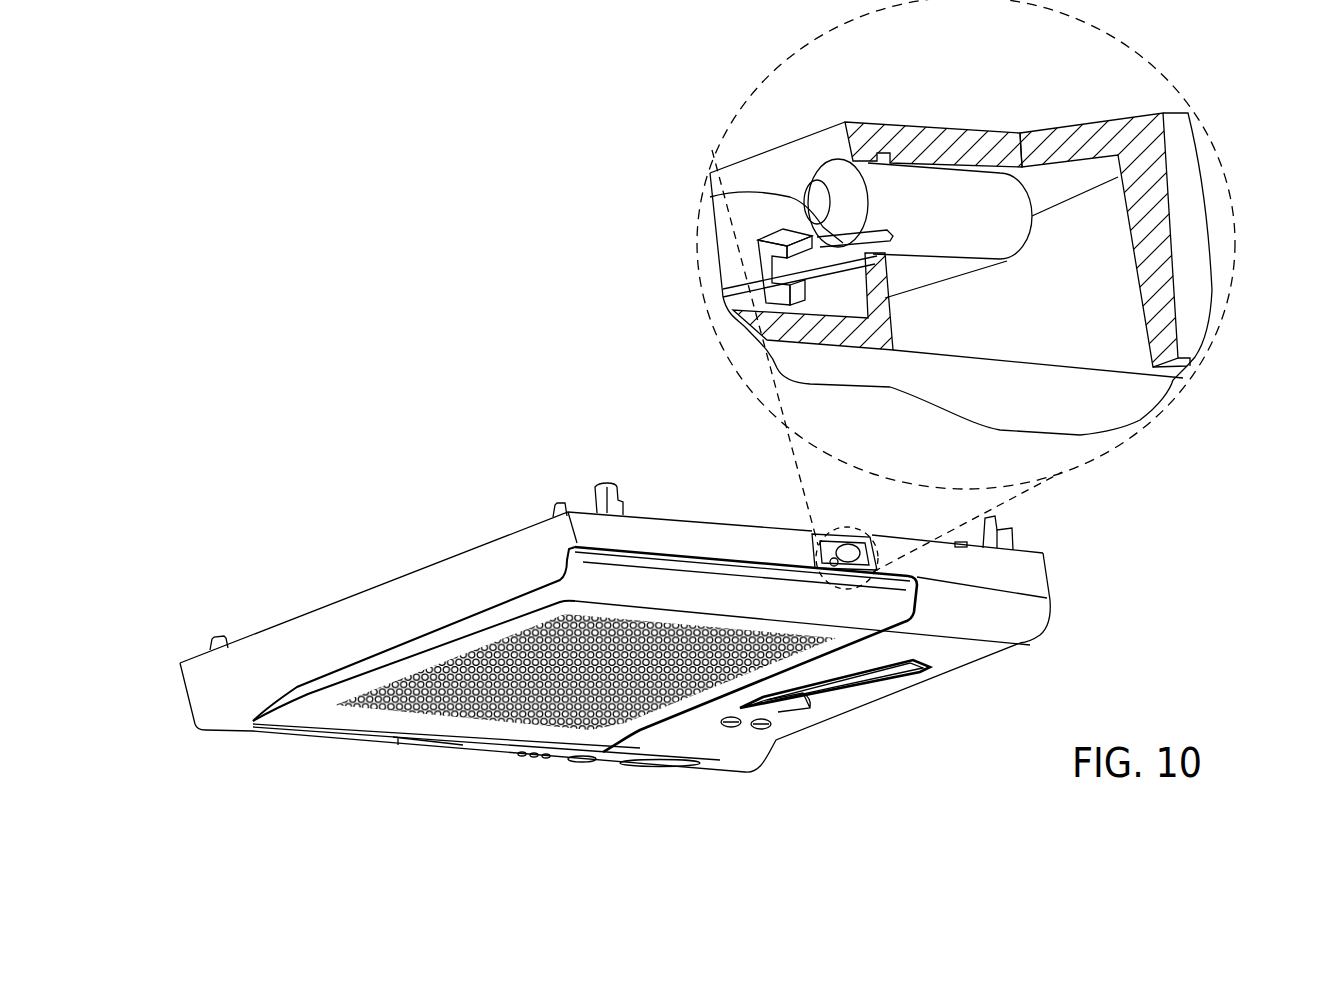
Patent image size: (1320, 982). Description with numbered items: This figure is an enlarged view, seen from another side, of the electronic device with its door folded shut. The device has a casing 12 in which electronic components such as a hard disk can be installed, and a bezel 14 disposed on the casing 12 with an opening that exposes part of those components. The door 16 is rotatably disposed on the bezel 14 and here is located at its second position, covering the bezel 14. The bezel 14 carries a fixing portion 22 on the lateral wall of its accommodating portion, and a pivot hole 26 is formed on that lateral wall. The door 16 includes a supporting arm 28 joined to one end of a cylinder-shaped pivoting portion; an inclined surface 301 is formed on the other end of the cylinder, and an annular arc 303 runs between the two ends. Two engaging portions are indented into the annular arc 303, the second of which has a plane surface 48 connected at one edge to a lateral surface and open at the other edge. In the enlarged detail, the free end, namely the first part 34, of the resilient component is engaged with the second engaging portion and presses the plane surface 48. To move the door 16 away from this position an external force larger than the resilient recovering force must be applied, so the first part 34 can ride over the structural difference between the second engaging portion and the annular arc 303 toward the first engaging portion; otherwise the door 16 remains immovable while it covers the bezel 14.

The casing 12 is at (1025, 622).
The bezel 14 is at (1040, 407).
The door 16 is at (317, 708).
The fixing portion 22 is at (780, 367).
The pivot hole 26 is at (848, 156).
The supporting arm 28 is at (845, 552).
The inclined surface 301 is at (847, 197).
The annular arc 303 is at (940, 213).
The first part 34 is at (875, 302).
The plane surface 48 is at (710, 198).